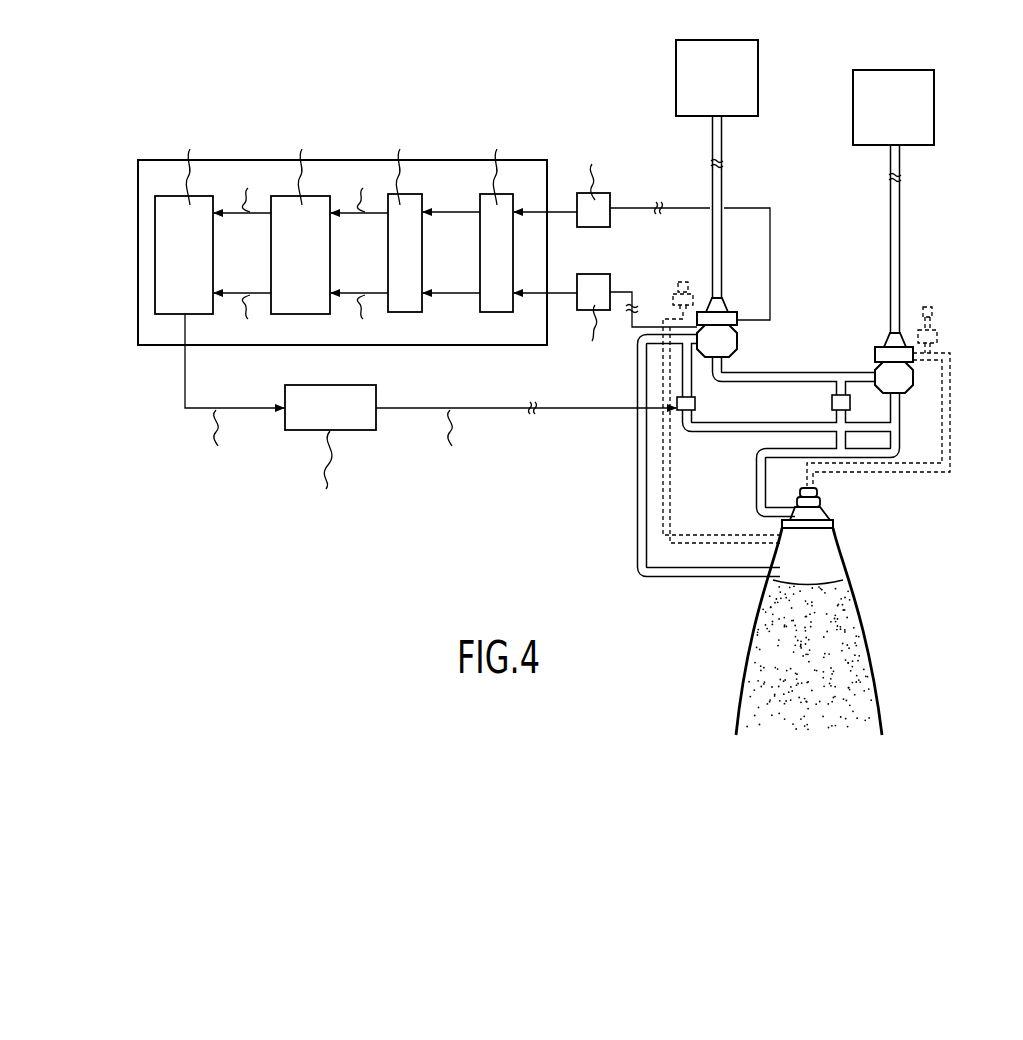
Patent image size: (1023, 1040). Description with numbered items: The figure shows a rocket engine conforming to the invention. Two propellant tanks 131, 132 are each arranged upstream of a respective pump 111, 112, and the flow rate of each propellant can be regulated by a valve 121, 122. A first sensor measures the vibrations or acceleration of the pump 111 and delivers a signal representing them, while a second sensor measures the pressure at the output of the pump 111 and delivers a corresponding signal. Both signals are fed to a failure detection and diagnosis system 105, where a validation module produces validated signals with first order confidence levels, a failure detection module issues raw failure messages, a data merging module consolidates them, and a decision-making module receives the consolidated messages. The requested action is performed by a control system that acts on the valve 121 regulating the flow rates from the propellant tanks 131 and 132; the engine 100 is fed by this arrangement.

The bottle / container 100 is at (852, 642).
The failure detection and diagnosis system 105 is at (507, 346).
The pump 111 is at (722, 341).
The pump 112 is at (877, 372).
The valve 121 is at (695, 404).
The valve 122 is at (832, 404).
The propellant tank 131 is at (717, 104).
The propellant tank 132 is at (893, 126).